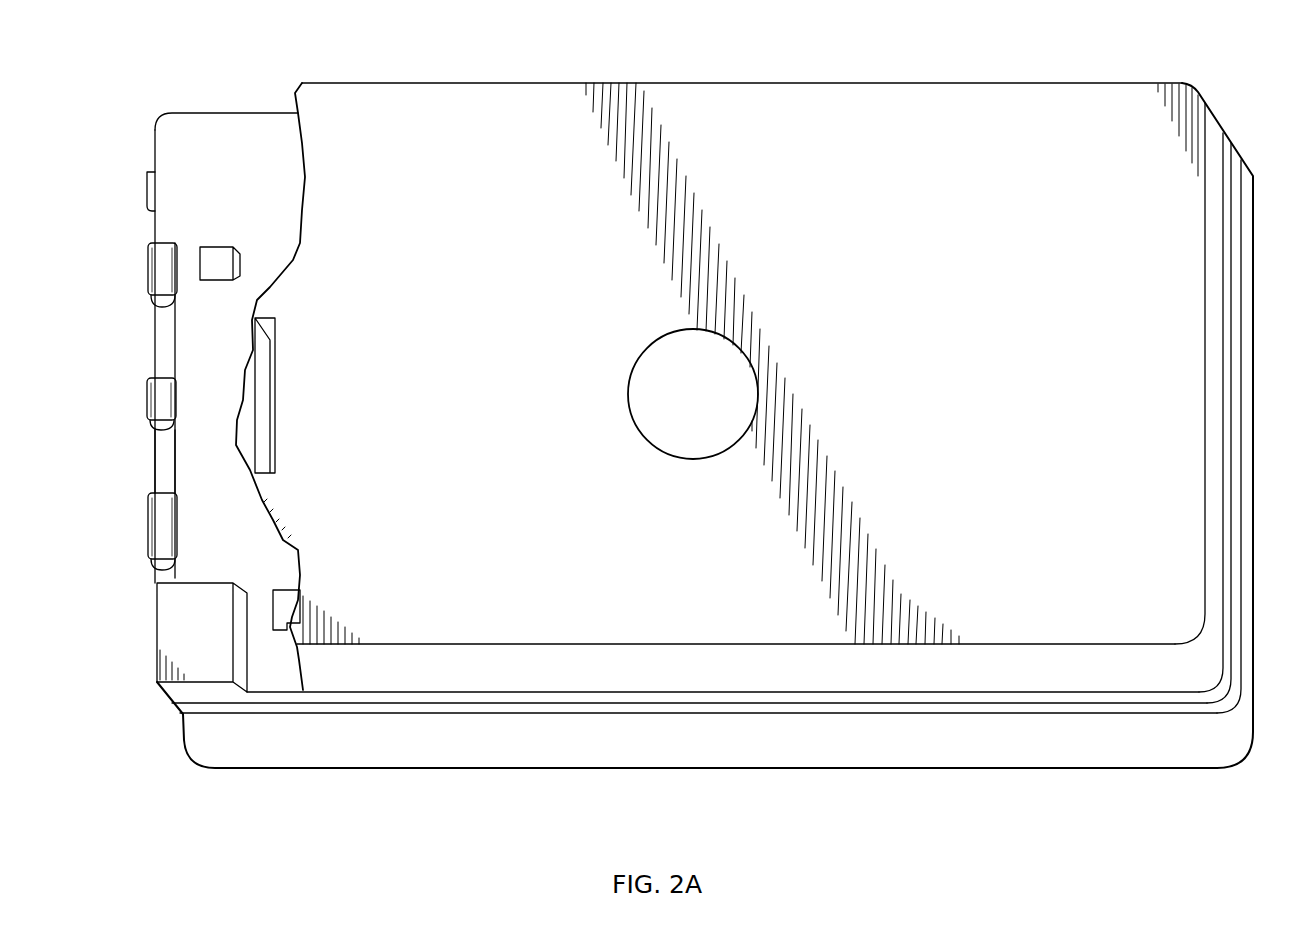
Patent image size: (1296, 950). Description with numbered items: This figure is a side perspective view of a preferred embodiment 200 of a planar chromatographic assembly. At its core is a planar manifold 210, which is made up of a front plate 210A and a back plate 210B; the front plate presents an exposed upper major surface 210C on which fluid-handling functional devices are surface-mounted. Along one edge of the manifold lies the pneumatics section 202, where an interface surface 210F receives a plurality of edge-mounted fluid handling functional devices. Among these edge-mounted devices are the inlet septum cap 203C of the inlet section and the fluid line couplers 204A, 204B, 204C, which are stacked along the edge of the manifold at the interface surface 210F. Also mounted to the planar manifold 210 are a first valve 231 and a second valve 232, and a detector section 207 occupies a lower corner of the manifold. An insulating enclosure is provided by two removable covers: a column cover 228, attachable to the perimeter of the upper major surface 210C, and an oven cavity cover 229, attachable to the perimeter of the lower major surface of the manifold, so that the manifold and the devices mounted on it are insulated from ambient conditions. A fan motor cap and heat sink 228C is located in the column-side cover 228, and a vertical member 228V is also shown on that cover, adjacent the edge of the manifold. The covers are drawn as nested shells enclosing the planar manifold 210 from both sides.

The preferred embodiment 200 is at (980, 58).
The pneumatics section 202 is at (128, 357).
The inlet septum cap 203C is at (147, 193).
The fluid line coupler 204A is at (148, 278).
The fluid line coupler 204B is at (168, 402).
The fluid line coupler 204C is at (150, 548).
The detector section 207 is at (219, 645).
The planar manifold 210 is at (230, 112).
The front plate 210A is at (350, 695).
The back plate 210B is at (462, 705).
The upper major surface 210C is at (254, 166).
The interface surface 210F is at (171, 463).
The column cover 228 is at (589, 173).
The fan motor cap/heat sink 228C is at (726, 408).
The vertical slot member 228V is at (270, 470).
The oven cavity cover 229 is at (741, 760).
The first valve 231 is at (216, 247).
The second valve 232 is at (273, 593).